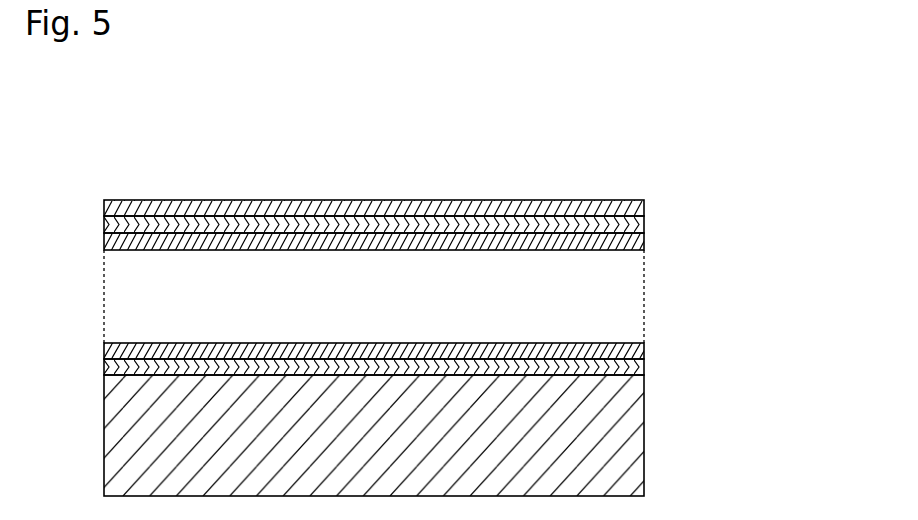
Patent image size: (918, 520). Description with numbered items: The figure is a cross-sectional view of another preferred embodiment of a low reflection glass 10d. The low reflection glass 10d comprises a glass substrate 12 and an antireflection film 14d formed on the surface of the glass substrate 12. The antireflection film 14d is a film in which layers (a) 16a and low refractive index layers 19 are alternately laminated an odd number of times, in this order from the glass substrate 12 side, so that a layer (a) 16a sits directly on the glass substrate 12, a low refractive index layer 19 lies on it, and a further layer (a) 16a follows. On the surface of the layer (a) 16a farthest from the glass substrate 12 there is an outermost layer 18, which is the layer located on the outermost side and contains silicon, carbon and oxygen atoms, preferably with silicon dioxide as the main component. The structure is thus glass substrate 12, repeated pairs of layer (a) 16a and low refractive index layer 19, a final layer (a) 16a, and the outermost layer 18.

The low reflection glass 10d is at (384, 172).
The glass substrate 12 is at (637, 432).
The antireflection film 14d is at (735, 177).
The layer (a) 16a is at (637, 224).
The outermost layer 18 is at (637, 211).
The low refractive index layer 19 is at (637, 240).